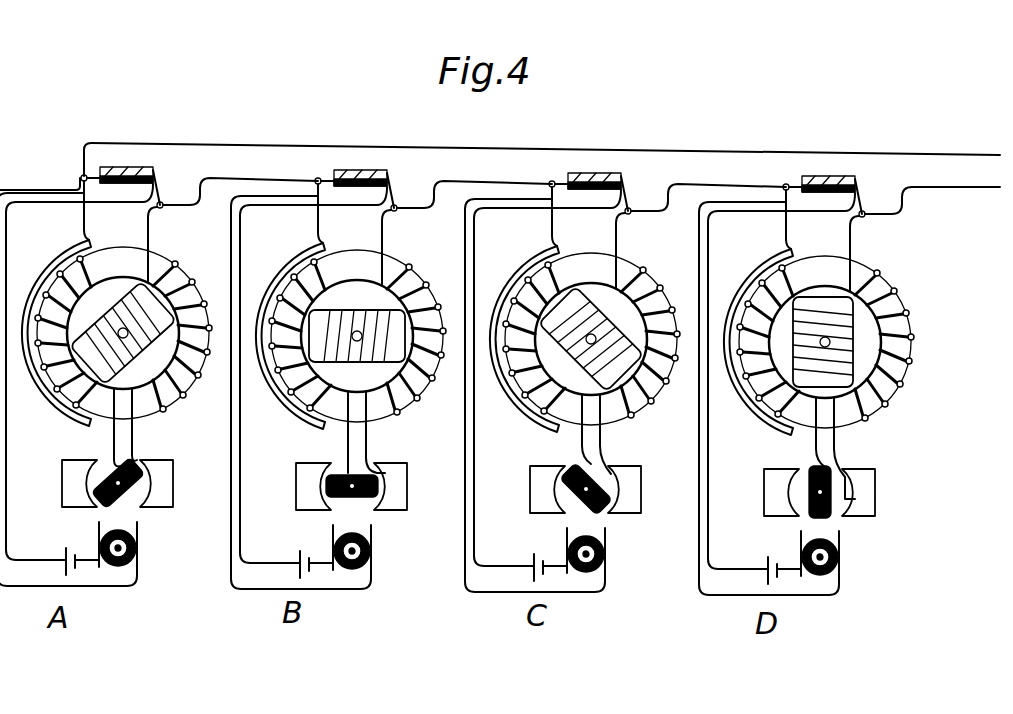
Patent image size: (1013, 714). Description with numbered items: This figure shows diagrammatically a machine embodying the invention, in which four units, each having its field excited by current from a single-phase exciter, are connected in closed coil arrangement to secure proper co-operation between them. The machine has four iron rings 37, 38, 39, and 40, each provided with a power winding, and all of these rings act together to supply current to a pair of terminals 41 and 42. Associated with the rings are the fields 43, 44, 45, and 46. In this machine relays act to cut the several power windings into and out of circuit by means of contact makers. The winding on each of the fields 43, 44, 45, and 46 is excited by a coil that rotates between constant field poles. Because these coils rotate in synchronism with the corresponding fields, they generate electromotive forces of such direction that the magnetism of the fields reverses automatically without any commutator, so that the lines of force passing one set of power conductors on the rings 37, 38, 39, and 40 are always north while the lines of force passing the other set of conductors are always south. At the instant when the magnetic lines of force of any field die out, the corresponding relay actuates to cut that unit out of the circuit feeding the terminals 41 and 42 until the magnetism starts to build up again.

The iron ring 37 is at (45, 276).
The iron ring 38 is at (357, 327).
The iron ring 39 is at (591, 329).
The iron ring 40 is at (829, 336).
The terminal 41 is at (968, 152).
The terminal 42 is at (975, 191).
The field 43 is at (145, 320).
The field 44 is at (383, 308).
The field 45 is at (613, 325).
The field 46 is at (875, 342).